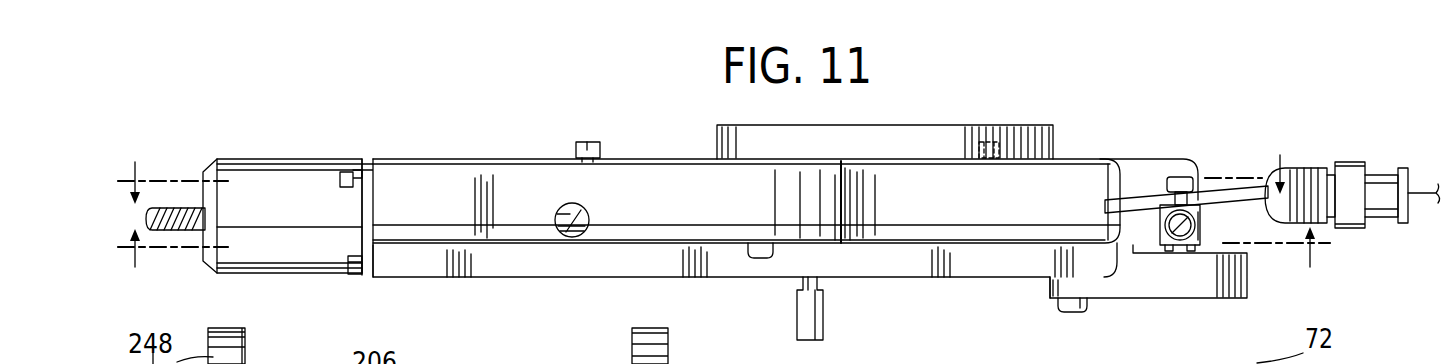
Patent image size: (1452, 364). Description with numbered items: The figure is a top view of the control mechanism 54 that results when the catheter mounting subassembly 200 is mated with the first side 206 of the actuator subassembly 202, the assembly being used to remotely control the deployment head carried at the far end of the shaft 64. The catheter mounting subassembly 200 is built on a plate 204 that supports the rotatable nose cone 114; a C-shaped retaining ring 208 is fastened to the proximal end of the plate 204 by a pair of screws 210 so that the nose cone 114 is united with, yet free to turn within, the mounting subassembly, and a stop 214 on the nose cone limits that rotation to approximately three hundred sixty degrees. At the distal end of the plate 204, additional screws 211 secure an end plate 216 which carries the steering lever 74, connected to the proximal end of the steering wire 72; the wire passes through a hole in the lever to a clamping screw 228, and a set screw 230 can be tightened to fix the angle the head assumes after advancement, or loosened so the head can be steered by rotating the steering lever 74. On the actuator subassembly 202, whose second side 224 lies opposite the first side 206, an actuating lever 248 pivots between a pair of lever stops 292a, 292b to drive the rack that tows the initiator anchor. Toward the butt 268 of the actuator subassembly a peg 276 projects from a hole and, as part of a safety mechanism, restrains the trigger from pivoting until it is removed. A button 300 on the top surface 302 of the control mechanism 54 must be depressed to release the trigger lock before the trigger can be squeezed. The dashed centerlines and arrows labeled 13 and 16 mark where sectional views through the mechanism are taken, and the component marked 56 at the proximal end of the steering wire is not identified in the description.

The section line 13 is at (724, 267).
The section line 16 is at (704, 163).
The control mechanism 54 is at (380, 161).
The knob 56 is at (1213, 203).
The shaft 64 is at (190, 208).
The steering wire 72 is at (1117, 202).
The steering lever 74 is at (1213, 255).
The nose cone 114 is at (289, 257).
The catheter mounting subassembly 200 is at (1162, 299).
The actuator subassembly 202 is at (530, 161).
The plate 204 is at (555, 260).
The first side 206 is at (653, 252).
The C-shaped retaining ring 208 is at (370, 204).
The screws 210 is at (362, 274).
The additional screws 211 is at (1082, 313).
The stop 214 is at (335, 172).
The end plate 216 is at (1055, 285).
The second side 224 is at (687, 143).
The clamping screw 228 is at (1167, 205).
The set screw 230 is at (1183, 171).
The actuating lever 248 is at (930, 142).
The butt 268 is at (1163, 163).
The peg 276 is at (823, 328).
The lever stop 292a is at (993, 142).
The lever stop 292b is at (588, 142).
The button 300 is at (573, 217).
The top surface 302 is at (676, 346).